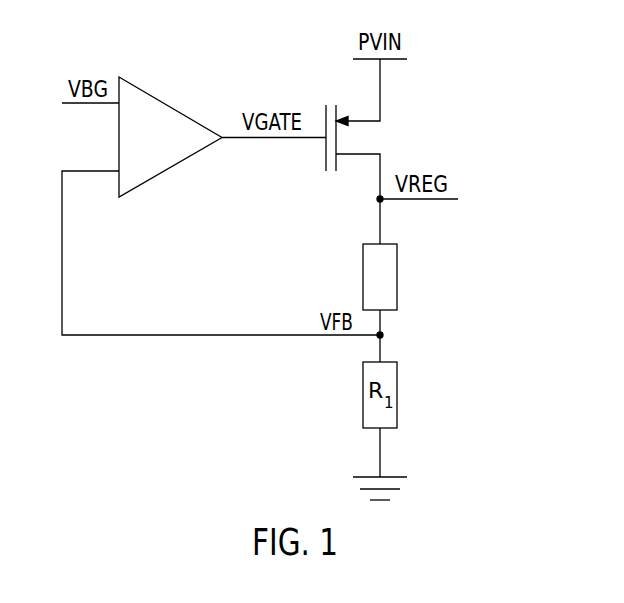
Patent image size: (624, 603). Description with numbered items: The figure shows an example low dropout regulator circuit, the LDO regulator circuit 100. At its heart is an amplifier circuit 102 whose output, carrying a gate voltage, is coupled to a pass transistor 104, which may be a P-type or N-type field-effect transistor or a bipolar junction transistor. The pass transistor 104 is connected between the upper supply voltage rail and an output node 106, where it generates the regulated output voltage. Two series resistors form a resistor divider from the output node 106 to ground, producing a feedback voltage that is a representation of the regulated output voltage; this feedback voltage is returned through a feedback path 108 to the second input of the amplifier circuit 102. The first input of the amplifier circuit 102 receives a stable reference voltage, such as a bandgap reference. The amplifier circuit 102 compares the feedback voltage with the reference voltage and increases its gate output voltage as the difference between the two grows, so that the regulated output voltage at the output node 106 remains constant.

The LDO regulator circuit 100 is at (457, 45).
The amplifier circuit 102 is at (173, 107).
The pass transistor 104 is at (326, 155).
The output node 106 is at (381, 229).
The feedback path 108 is at (210, 335).